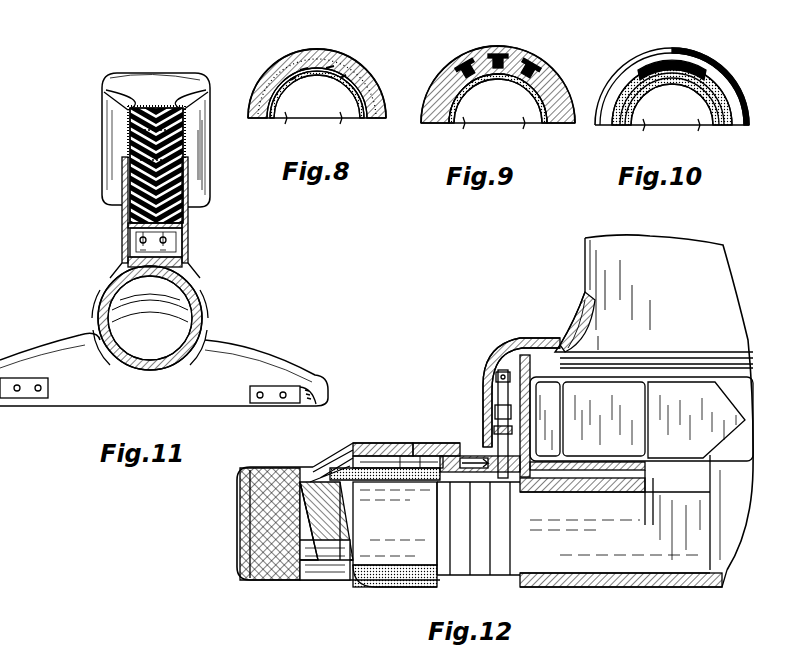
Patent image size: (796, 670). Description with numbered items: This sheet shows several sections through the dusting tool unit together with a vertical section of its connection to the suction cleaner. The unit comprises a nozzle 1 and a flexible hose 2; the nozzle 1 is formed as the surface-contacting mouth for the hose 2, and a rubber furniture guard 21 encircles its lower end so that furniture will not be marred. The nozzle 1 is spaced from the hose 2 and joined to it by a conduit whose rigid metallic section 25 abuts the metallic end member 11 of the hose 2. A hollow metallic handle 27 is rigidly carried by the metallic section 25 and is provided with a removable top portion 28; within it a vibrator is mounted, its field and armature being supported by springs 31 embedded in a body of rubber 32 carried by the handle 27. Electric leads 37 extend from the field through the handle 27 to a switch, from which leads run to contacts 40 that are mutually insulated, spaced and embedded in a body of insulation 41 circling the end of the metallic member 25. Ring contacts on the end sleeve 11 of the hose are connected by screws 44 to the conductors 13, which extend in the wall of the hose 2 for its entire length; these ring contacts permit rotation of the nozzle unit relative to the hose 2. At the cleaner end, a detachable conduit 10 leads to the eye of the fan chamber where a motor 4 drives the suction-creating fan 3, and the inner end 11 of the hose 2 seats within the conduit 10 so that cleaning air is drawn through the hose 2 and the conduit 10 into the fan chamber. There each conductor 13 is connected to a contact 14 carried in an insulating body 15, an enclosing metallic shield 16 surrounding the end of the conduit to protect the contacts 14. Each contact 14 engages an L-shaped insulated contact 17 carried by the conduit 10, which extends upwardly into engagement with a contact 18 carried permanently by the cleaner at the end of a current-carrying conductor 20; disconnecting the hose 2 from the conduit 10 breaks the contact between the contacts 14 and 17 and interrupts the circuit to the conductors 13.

In FIG. 11, the nozzle 1 is at (90, 392).
In FIG. 10, the flexible hose 2 is at (638, 93).
In FIG. 12, the flexible hose 2 is at (276, 582).
In FIG. 12, the suction-creating fan 3 is at (641, 419).
In FIG. 12, the motor 4 is at (585, 280).
In FIG. 12, the converter or conduit 10 is at (632, 588).
In FIG. 8, the inner end of hose 11 is at (323, 75).
In FIG. 9, the inner end of hose 11 is at (490, 78).
In FIG. 10, the inner end of hose 11 is at (700, 85).
In FIG. 12, the inner end of hose 11 is at (512, 534).
In FIG. 10, the electrical conductors 13 is at (686, 66).
In FIG. 12, the electrical conductors 13 is at (343, 460).
In FIG. 12, the contact 14 is at (423, 443).
In FIG. 12, the insulating body 15 is at (386, 448).
In FIG. 12, the metallic shield or body 16 is at (365, 443).
In FIG. 12, the insulated contact 17 is at (466, 478).
In FIG. 12, the contact 18 is at (484, 408).
In FIG. 12, the current-carrying conductor 20 is at (487, 372).
In FIG. 11, the rubber furniture guard 21 is at (320, 382).
In FIG. 11, the rigid metallic section 25 is at (205, 308).
In FIG. 11, the hollow metallic handle 27 is at (198, 185).
In FIG. 11, the removable top portion 28 is at (190, 78).
In FIG. 11, the springs 31 is at (128, 160).
In FIG. 11, the body of rubber 32 is at (128, 218).
In FIG. 11, the electric leads 37 is at (132, 248).
In FIG. 8, the contact 40 is at (338, 58).
In FIG. 8, the body of insulation 41 is at (372, 80).
In FIG. 9, the screws 44 is at (522, 54).